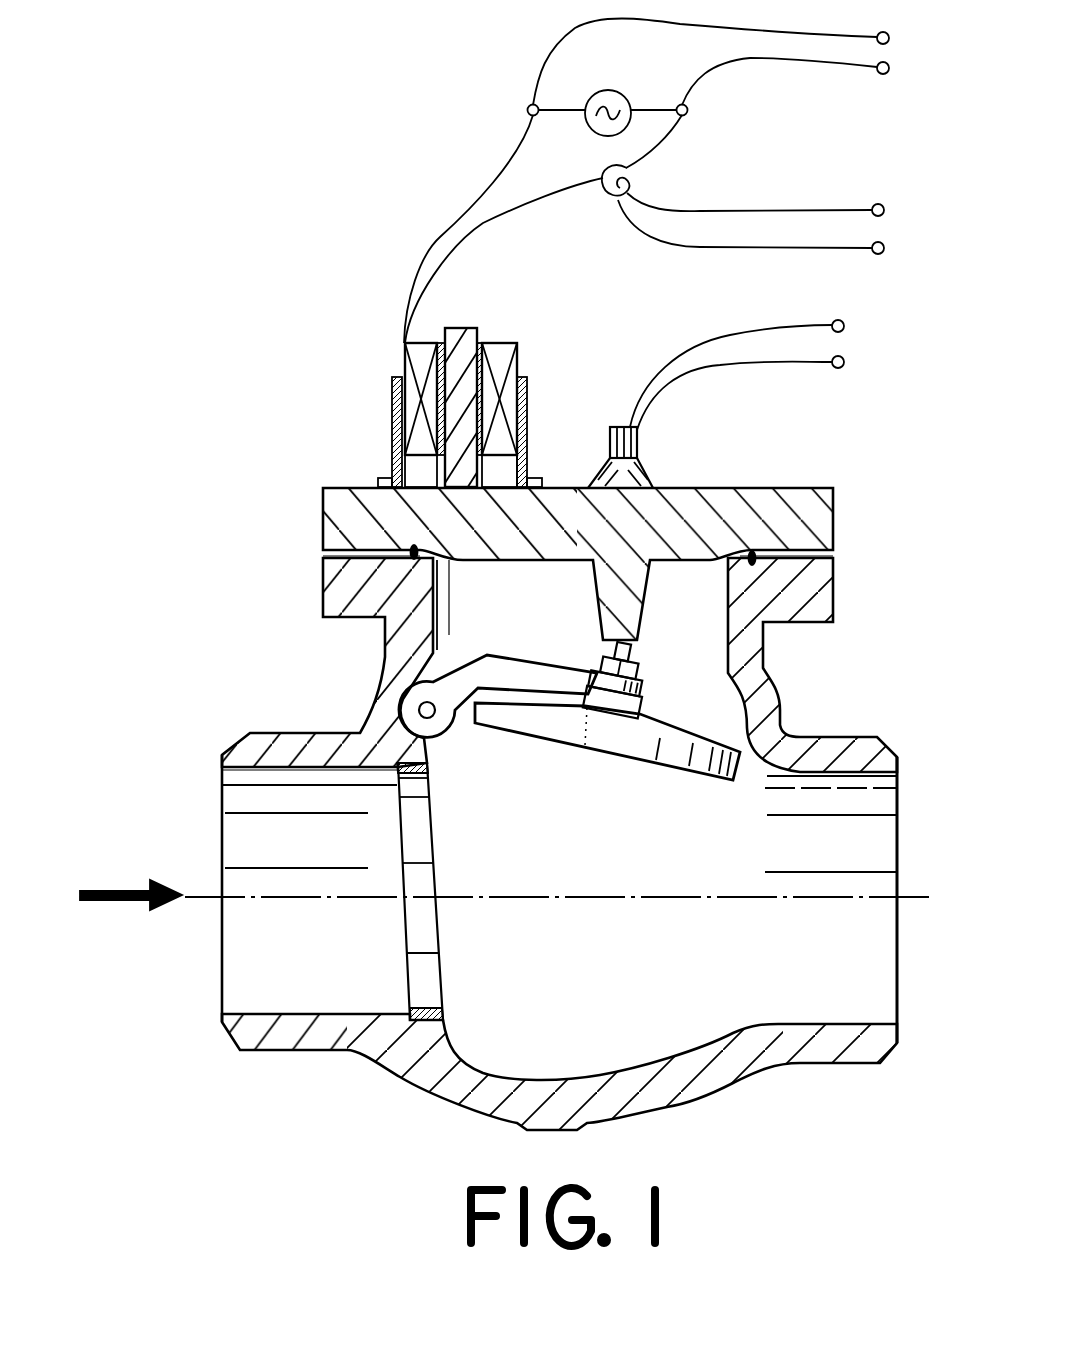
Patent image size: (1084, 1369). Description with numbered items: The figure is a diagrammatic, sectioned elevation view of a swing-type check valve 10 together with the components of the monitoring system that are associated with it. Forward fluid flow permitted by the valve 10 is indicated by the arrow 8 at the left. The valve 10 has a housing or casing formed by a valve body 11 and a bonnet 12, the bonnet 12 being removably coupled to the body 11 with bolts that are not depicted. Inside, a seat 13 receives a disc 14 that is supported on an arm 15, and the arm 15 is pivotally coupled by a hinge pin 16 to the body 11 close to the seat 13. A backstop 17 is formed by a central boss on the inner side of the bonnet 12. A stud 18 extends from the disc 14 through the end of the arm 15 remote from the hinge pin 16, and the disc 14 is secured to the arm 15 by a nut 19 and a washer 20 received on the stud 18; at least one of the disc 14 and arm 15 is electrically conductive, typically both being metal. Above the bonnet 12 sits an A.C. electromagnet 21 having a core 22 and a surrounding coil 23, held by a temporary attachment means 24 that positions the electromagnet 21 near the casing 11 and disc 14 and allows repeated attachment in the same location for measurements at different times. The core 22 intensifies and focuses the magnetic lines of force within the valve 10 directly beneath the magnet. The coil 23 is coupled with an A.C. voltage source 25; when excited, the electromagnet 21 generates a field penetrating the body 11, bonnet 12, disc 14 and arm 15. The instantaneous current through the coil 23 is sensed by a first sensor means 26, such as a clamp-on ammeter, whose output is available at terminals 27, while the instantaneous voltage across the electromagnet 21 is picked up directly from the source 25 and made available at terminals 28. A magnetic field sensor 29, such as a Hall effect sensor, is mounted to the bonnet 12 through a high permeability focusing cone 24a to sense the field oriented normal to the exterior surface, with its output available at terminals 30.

The arrow 8 is at (122, 888).
The check valve 10 is at (284, 666).
The valve body 11 is at (836, 588).
The bonnet 12 is at (836, 520).
The seat 13 is at (443, 1020).
The disc 14 is at (680, 760).
The arm 15 is at (488, 662).
The hinge pin 16 is at (420, 705).
The backstop 17 is at (638, 630).
The stud 18 is at (637, 653).
The nut 19 is at (642, 677).
The washer 20 is at (643, 696).
The A.C. electromagnet 21 is at (399, 357).
The core 22 is at (467, 347).
The coil 23 is at (503, 360).
The temporary attachment means 24 is at (381, 464).
The sensor mount 24a is at (648, 476).
The A.C. voltage source 25 is at (595, 98).
The first sensor means 26 is at (648, 178).
The terminals 27 is at (777, 226).
The terminals 28 is at (909, 52).
The magnetic field sensor 29 is at (640, 443).
The terminals 30 is at (770, 375).